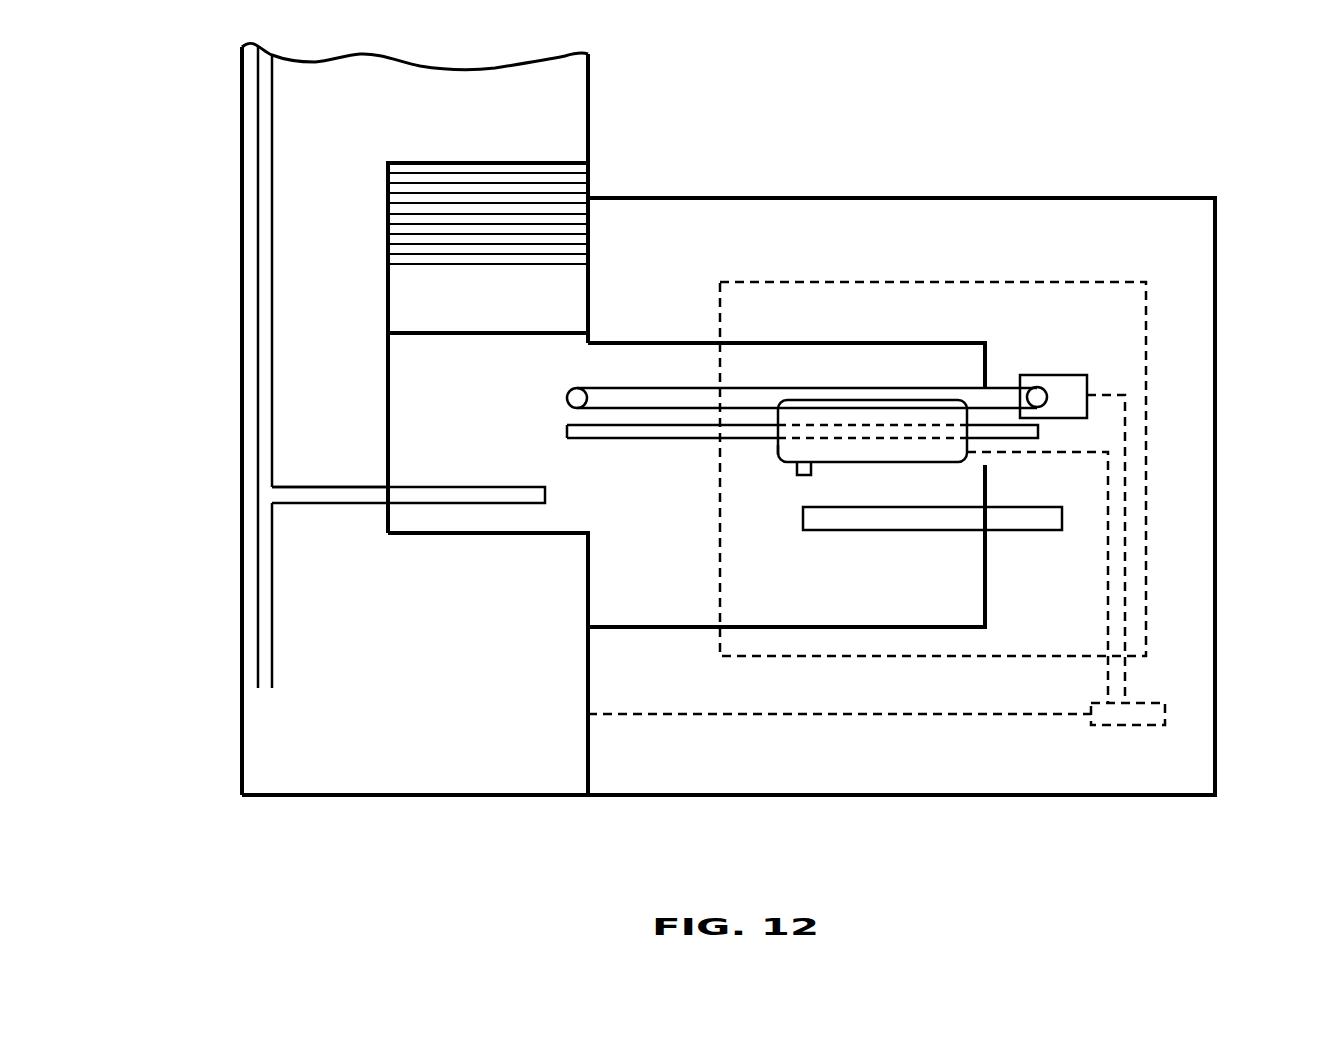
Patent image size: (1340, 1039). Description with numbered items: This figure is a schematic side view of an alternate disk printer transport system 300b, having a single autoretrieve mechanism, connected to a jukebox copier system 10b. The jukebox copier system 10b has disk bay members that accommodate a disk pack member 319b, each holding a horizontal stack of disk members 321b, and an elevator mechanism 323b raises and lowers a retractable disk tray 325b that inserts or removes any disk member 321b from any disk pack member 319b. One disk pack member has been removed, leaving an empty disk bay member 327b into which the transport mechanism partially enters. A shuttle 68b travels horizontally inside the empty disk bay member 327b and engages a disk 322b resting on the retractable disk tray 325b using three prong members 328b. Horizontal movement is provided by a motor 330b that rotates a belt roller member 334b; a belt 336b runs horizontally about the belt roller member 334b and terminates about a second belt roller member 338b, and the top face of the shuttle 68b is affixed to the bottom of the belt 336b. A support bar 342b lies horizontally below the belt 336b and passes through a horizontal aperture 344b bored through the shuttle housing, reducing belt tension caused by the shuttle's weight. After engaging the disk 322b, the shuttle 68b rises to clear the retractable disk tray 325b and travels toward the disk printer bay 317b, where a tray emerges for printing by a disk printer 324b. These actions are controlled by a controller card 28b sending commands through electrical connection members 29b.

The jukebox copier system 10b is at (244, 668).
The controller card 28b is at (1118, 725).
The electrical connection members 29b is at (1108, 567).
The shuttle 68b is at (778, 448).
The disk printer transport system 300b is at (1215, 680).
The disk printer bay 317b is at (1062, 515).
The disk pack member 319b is at (556, 163).
The disk members 321b is at (388, 252).
The disk 322b is at (427, 503).
The elevator mechanism 323b is at (258, 570).
The disk printer 324b is at (760, 282).
The retractable disk tray 325b is at (315, 487).
The empty disk bay member 327b is at (388, 383).
The prong members 328b is at (795, 466).
The motor 330b is at (1087, 390).
The belt roller member 334b is at (1047, 390).
The belt 336b is at (970, 386).
The second belt roller member 338b is at (567, 398).
The support bar 342b is at (1040, 435).
The horizontal aperture 344b is at (813, 424).